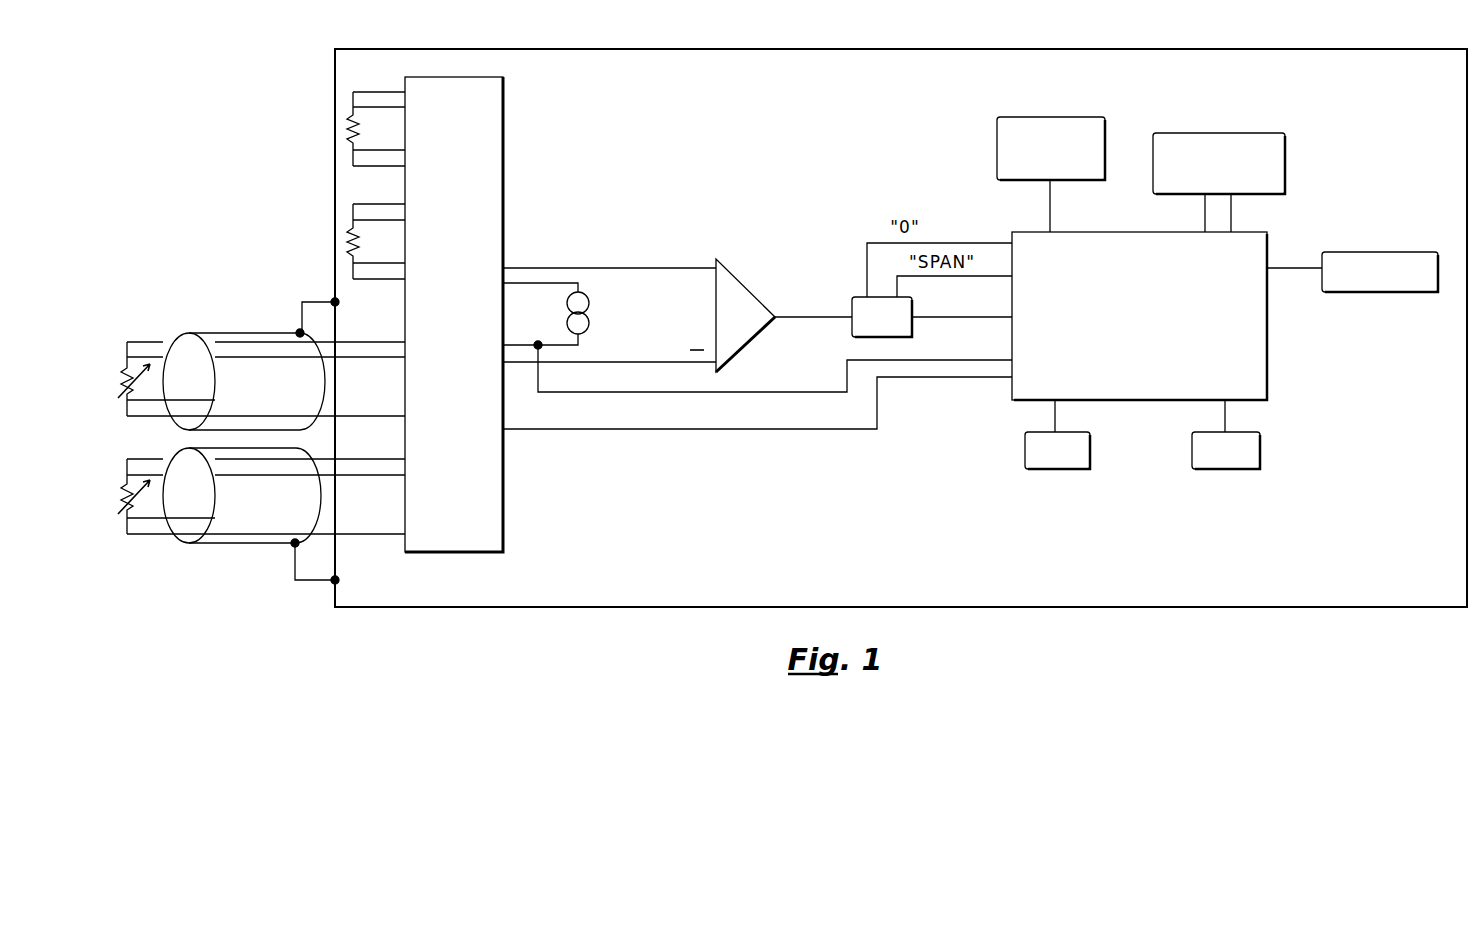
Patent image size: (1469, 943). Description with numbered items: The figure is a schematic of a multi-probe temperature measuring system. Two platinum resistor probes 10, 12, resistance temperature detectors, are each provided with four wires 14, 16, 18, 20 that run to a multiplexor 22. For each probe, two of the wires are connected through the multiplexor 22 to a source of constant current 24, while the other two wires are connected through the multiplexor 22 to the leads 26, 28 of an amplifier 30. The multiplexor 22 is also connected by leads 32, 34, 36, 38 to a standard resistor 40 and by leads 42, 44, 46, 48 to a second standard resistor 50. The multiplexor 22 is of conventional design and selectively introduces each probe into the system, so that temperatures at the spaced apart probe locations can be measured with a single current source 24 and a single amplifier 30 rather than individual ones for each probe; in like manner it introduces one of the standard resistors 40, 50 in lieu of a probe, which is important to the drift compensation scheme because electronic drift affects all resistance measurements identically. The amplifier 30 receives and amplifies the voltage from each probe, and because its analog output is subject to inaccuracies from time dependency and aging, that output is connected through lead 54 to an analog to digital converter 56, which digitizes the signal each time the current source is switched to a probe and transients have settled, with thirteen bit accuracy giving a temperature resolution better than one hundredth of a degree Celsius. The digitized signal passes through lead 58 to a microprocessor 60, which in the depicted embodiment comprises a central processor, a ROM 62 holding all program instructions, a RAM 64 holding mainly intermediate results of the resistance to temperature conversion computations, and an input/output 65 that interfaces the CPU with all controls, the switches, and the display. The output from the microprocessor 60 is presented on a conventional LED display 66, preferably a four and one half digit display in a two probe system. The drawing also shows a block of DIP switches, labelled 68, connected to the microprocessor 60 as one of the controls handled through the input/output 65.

The platinum resistor probe 10 is at (144, 327).
The platinum resistor probe 12 is at (144, 459).
The wire 14 is at (375, 341).
The wire 16 is at (373, 359).
The wire 18 is at (369, 458).
The wire 20 is at (373, 477).
The multiplexor 22 is at (504, 229).
The source of constant current 24 is at (590, 308).
The amplifier lead 26 is at (655, 267).
The amplifier lead 28 is at (620, 363).
The amplifier 30 is at (748, 340).
The lead 32 is at (374, 92).
The lead 34 is at (383, 108).
The lead 36 is at (388, 150).
The lead 38 is at (392, 166).
The standard resistor 40 is at (351, 121).
The lead 42 is at (375, 204).
The lead 44 is at (383, 221).
The lead 46 is at (388, 263).
The lead 48 is at (375, 280).
The second standard resistor 50 is at (351, 238).
The lead 54 is at (801, 315).
The analog to digital converter 56 is at (912, 334).
The lead 58 is at (936, 318).
The microprocessor 60 is at (1010, 392).
The ROM 62 is at (1025, 461).
The RAM 64 is at (1192, 460).
The input/output 65 is at (997, 158).
The LED display 66 is at (1382, 251).
The DIP switches 68 is at (1285, 160).